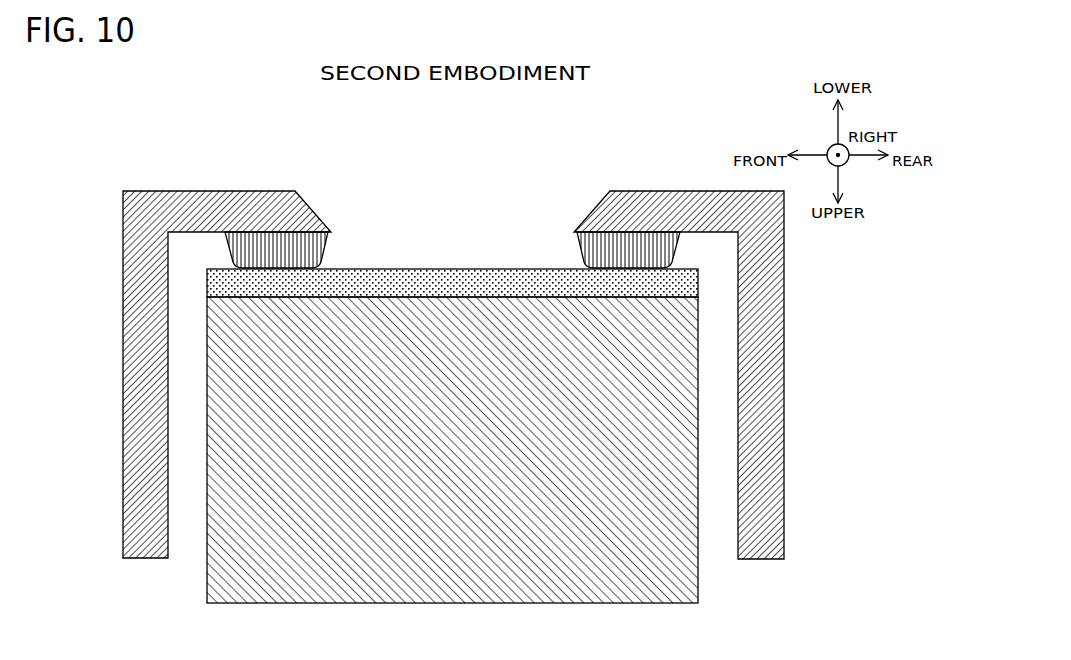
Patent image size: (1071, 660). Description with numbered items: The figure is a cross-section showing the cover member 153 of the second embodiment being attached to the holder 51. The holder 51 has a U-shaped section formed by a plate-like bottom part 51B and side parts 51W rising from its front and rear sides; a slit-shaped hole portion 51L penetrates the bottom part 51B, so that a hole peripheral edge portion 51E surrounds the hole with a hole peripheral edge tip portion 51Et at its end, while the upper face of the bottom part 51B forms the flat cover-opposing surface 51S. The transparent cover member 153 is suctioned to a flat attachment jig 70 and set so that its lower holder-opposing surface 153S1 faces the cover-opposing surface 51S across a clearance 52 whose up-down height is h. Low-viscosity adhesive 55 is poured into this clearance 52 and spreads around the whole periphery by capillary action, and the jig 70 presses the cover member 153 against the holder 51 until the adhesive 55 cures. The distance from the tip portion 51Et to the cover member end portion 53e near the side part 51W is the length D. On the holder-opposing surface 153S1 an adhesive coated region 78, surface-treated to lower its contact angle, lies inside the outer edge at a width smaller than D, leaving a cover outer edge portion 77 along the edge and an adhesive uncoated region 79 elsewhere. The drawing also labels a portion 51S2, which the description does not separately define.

The holder 51 is at (122, 249).
The bottom part 51B is at (178, 200).
The cover-opposing surface 51S is at (205, 272).
The second inner surface of case 51S2 is at (421, 303).
The cover member end portion 53e is at (185, 236).
The side part 51W is at (123, 478).
The hole peripheral edge portion 51E is at (313, 208).
The hole peripheral edge tip portion 51Et is at (332, 226).
The hole portion 51L is at (490, 190).
The clearance 52 is at (244, 252).
The adhesive 55 is at (296, 228).
The cover outer edge portion 77 is at (219, 265).
The adhesive coated region 78 is at (276, 258).
The adhesive uncoated region 79 is at (493, 268).
The cover member 153 is at (466, 290).
The holder-opposing surface 153S1 is at (421, 266).
The attachment jig 70 is at (207, 603).
The height h is at (345, 232).
The length D is at (331, 234).